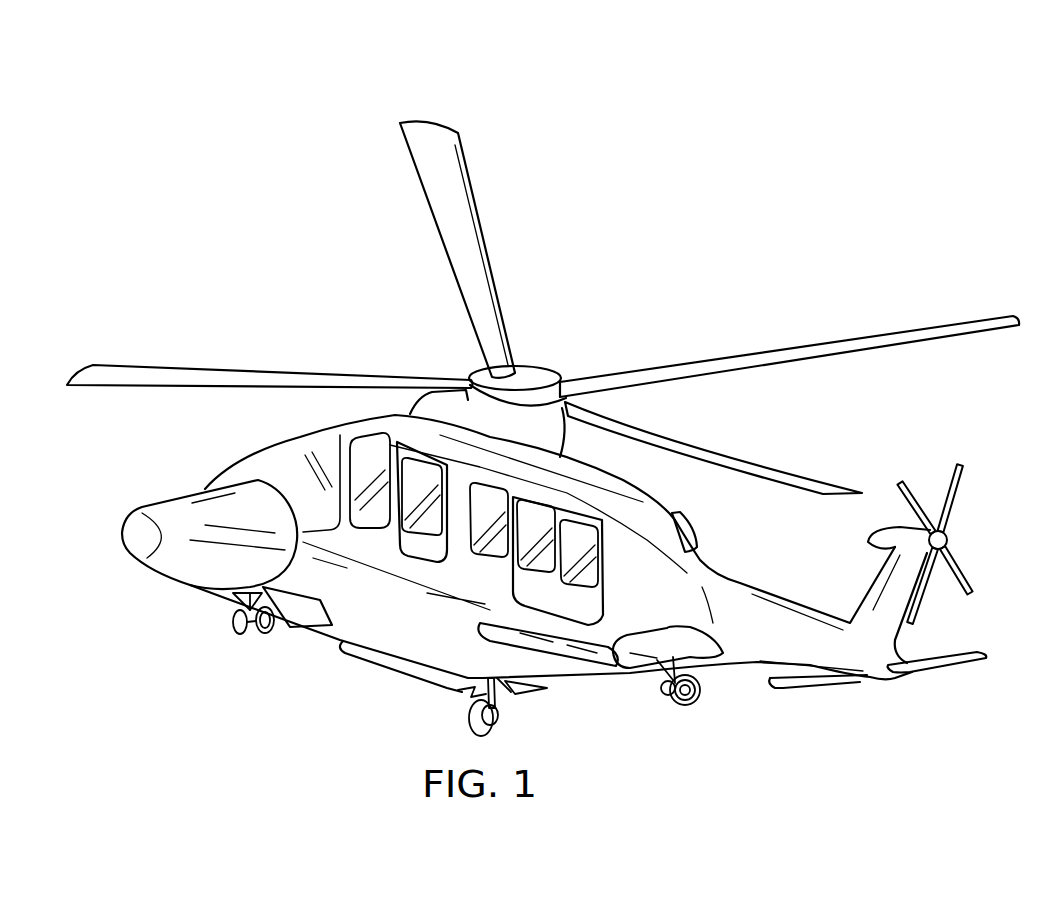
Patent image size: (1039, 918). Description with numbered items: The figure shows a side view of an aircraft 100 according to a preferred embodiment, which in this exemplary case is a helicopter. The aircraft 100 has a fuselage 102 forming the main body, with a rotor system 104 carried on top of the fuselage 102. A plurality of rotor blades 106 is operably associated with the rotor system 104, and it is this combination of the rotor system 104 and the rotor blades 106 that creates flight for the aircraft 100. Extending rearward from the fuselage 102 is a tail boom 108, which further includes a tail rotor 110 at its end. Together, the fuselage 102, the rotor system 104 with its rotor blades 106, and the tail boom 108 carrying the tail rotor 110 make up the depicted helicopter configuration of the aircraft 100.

The aircraft 100 is at (213, 110).
The fuselage 102 is at (340, 630).
The rotor system 104 is at (549, 341).
The rotor blades 106 is at (777, 363).
The tail boom 108 is at (750, 658).
The tail rotor 110 is at (953, 512).